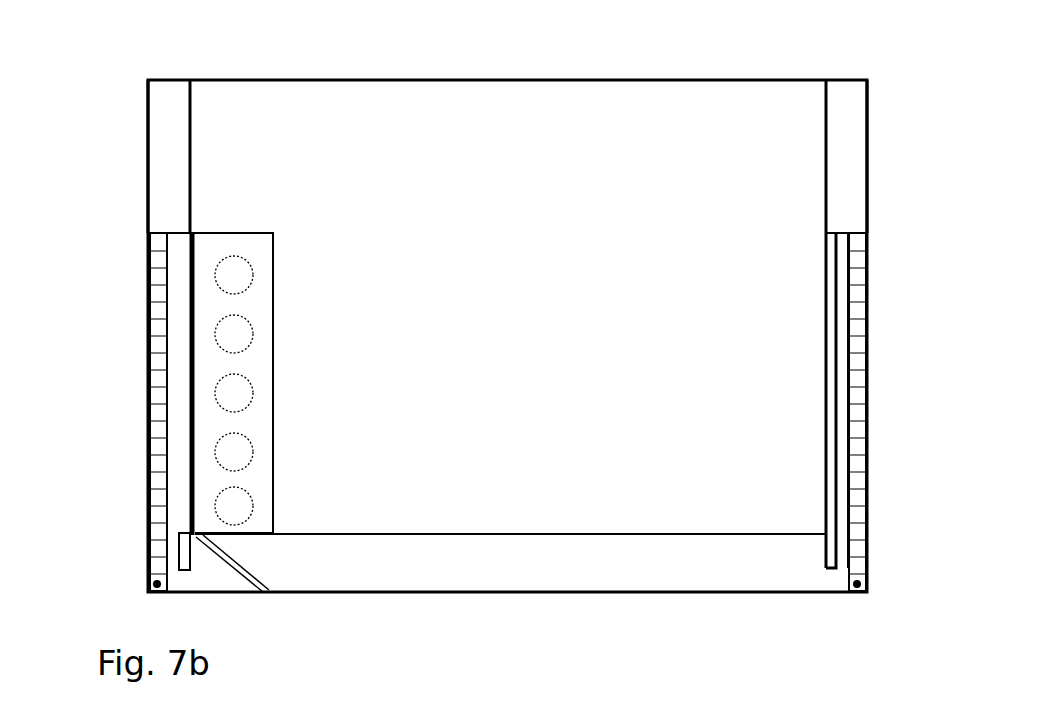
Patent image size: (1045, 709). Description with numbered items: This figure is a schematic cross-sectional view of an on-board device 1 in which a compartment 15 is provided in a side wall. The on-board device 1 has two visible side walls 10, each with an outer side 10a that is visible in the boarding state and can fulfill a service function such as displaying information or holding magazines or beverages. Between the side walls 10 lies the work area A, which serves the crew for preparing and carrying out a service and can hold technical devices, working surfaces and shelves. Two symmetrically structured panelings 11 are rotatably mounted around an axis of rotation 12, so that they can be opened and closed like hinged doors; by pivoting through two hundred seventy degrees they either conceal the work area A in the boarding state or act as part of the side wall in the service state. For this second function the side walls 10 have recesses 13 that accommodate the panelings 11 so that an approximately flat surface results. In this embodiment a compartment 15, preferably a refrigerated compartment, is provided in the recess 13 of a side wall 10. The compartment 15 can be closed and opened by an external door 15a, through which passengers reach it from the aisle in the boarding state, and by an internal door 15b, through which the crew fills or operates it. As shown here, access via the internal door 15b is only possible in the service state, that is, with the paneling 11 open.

The on-board device 1 is at (338, 66).
The work area A is at (551, 186).
The side wall 10 is at (178, 197).
The outer side 10a is at (148, 109).
The paneling 11 is at (158, 415).
The axis of rotation 12 is at (153, 588).
The recess 13 is at (843, 302).
The compartment 15 is at (250, 312).
The external door 15a is at (195, 297).
The internal door 15b is at (237, 560).